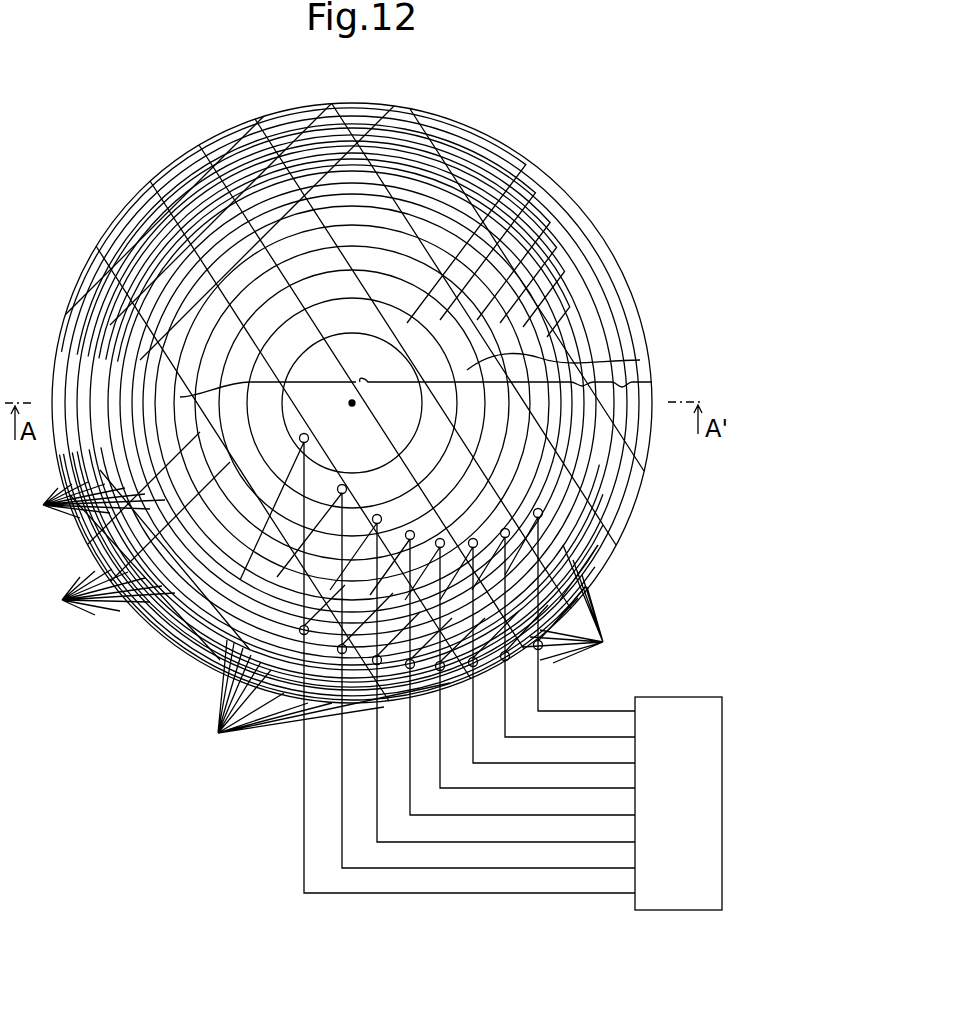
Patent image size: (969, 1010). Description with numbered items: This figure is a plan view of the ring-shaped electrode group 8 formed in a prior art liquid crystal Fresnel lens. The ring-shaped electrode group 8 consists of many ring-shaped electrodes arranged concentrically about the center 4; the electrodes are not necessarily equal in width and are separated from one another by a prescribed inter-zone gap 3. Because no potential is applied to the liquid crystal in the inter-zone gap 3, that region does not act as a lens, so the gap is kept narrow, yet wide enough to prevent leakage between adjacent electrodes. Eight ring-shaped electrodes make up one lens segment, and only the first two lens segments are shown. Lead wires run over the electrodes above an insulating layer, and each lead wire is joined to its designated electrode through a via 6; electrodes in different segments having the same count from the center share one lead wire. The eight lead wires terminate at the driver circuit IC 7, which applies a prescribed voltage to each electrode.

The ring-shaped electrode group 8 is at (478, 112).
The center 4 is at (352, 403).
The inter-zone gap 3 is at (100, 549).
The via 6 is at (412, 651).
The driver circuit IC 7 is at (680, 912).